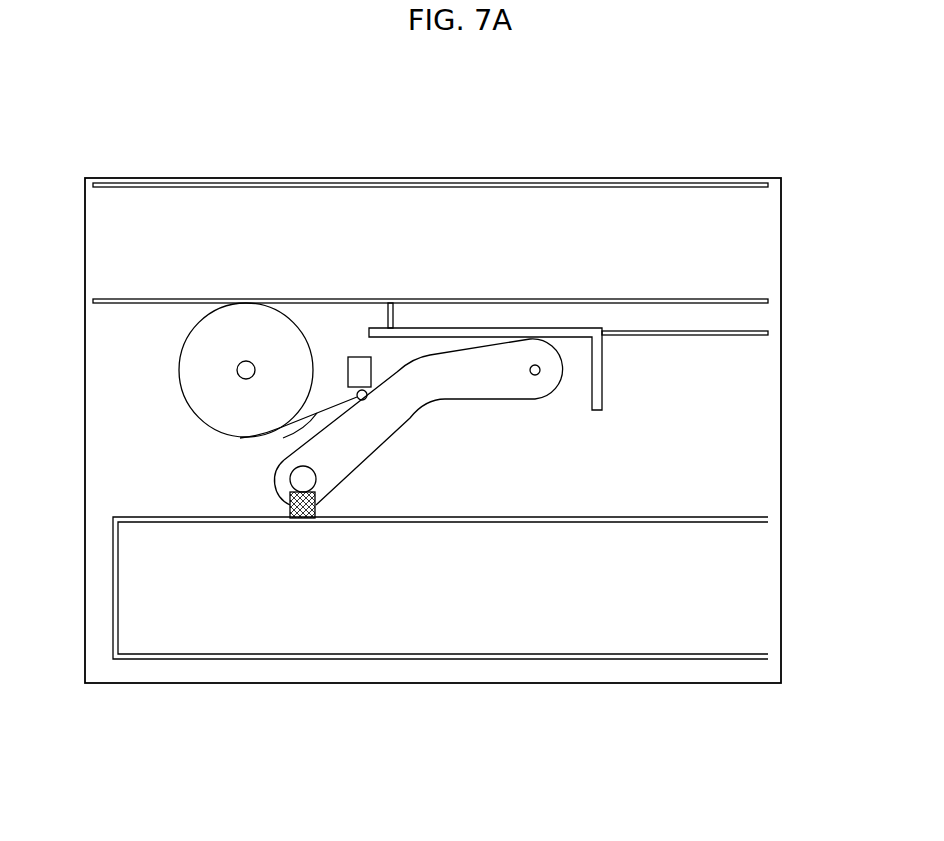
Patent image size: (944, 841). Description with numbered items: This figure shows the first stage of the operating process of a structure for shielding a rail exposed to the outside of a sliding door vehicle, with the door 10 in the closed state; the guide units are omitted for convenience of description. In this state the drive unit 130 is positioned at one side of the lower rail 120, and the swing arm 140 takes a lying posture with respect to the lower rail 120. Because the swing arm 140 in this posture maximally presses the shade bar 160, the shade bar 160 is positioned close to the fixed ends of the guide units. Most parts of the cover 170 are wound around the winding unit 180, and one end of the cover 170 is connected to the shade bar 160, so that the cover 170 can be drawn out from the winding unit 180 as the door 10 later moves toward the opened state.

The door 10 is at (433, 610).
The lower rail 120 is at (752, 317).
The drive unit 130 is at (566, 333).
The swing arm 140 is at (486, 364).
The shade bar 160 is at (366, 391).
The cover 170 is at (283, 438).
The winding unit 180 is at (245, 317).